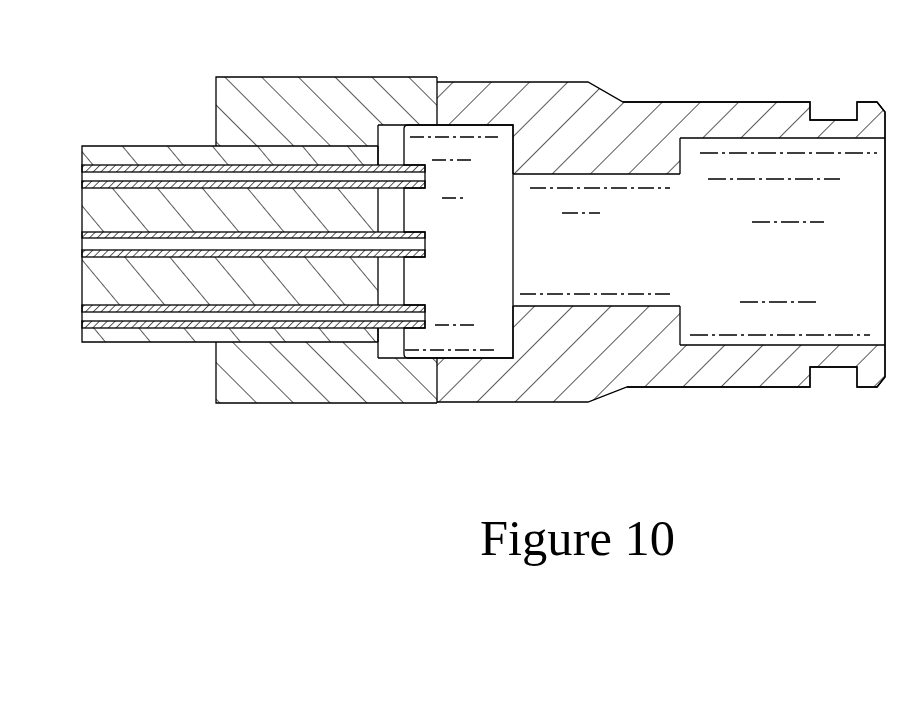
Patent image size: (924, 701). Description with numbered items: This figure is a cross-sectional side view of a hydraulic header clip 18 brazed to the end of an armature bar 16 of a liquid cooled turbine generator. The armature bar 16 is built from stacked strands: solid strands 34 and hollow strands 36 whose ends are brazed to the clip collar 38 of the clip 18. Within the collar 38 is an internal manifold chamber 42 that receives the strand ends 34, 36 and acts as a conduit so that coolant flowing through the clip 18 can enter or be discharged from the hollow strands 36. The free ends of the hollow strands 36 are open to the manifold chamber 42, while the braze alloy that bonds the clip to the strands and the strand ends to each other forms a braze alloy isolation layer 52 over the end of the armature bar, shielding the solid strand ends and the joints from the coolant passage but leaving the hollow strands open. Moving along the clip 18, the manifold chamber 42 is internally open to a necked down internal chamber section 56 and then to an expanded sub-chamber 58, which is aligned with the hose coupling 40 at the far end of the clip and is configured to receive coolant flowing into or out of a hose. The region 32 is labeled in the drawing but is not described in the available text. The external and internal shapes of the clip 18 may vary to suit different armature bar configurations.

The armature bar 16 is at (93, 145).
The hydraulic header clip 18 is at (607, 391).
The first body portion 32 is at (272, 87).
The solid strands 34 is at (147, 152).
The hollow strands 36 is at (88, 177).
The clip collar 38 is at (448, 82).
The hose coupling 40 is at (783, 102).
The manifold chamber 42 is at (498, 167).
The braze alloy isolation layer 52 is at (405, 207).
The necked down internal chamber section 56 is at (634, 225).
The expanded sub-chamber 58 is at (850, 277).